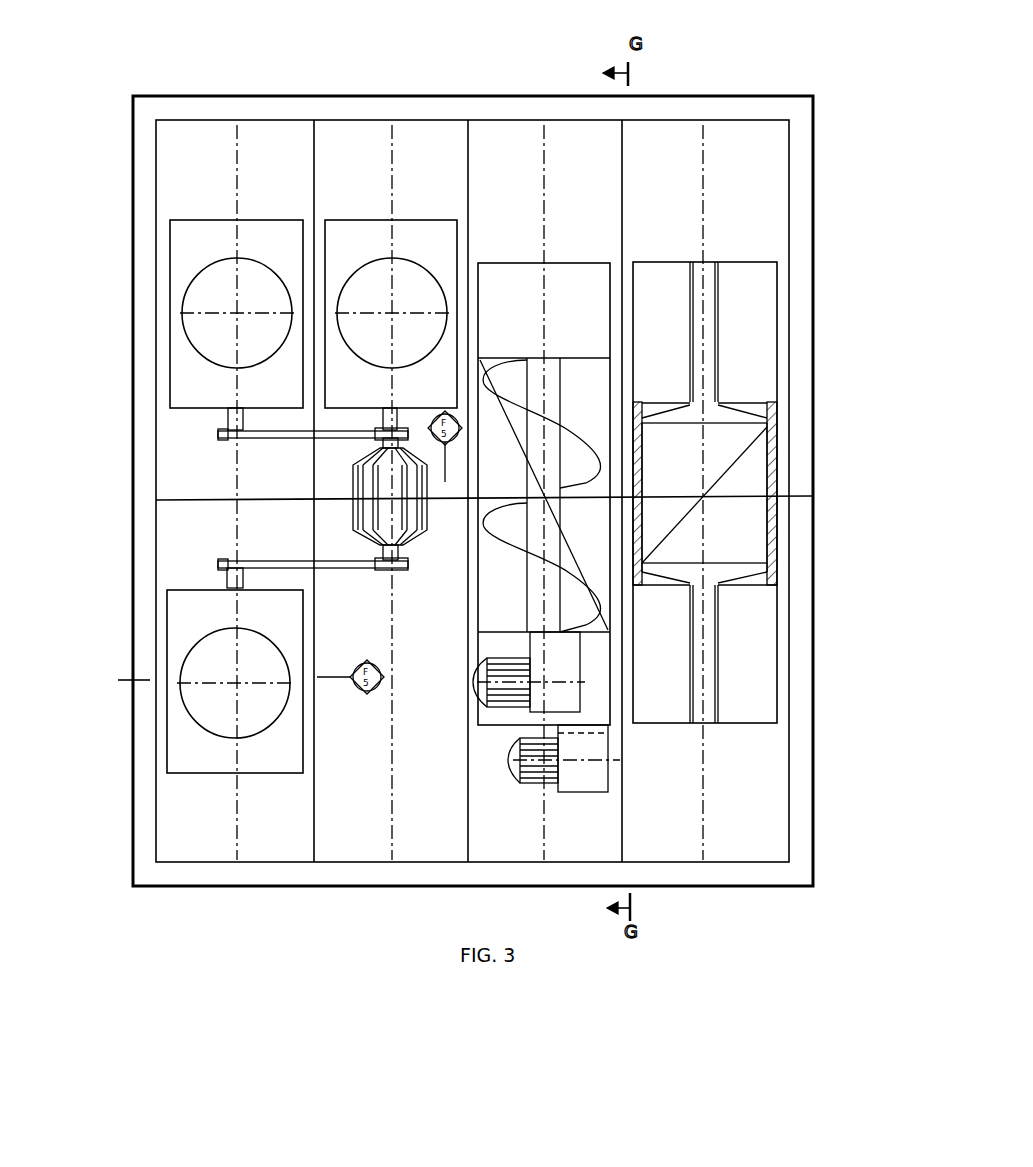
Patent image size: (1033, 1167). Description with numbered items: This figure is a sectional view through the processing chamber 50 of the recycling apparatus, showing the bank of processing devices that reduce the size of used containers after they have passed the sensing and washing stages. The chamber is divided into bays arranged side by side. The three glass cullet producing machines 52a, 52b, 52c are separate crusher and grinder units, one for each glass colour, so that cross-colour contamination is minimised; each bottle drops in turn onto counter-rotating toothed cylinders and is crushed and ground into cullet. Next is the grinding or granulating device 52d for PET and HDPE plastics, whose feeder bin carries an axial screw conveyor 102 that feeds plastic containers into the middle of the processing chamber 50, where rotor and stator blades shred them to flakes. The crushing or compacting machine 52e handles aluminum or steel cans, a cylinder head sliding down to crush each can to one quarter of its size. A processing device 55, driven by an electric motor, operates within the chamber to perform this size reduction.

The processing chamber 50 is at (272, 927).
The glass cullet producing machine 52a is at (245, 237).
The glass cullet producing machine 52b is at (404, 233).
The glass cullet producing machine 52c is at (215, 702).
The grinding or granulating device 52d is at (699, 517).
The crushing or compacting machine 52e is at (740, 318).
The processing device 55 is at (580, 792).
The axial screw conveyor 102 is at (583, 608).